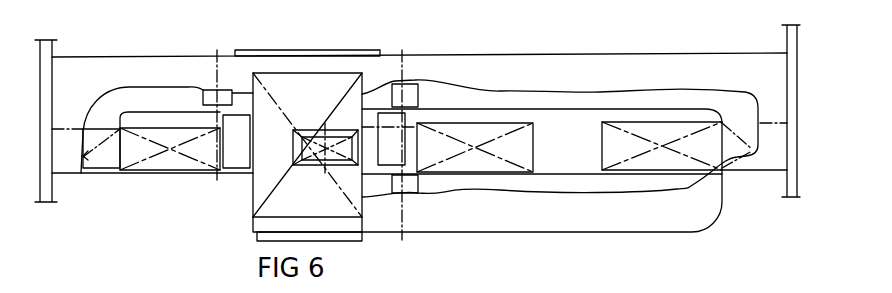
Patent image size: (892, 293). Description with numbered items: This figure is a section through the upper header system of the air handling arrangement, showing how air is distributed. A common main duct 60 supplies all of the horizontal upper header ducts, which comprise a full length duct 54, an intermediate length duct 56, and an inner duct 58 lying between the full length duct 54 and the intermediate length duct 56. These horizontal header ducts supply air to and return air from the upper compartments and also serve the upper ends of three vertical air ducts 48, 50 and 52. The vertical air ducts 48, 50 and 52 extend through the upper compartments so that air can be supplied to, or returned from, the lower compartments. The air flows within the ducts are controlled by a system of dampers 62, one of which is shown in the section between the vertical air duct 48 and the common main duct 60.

The vertical air duct 48 is at (102, 152).
The vertical air duct 50 is at (344, 146).
The vertical air duct 52 is at (740, 133).
The full length duct 54 is at (688, 64).
The intermediate length duct 56 is at (657, 213).
The inner duct 58 is at (217, 158).
The common main duct 60 is at (342, 73).
The dampers 62 is at (246, 126).